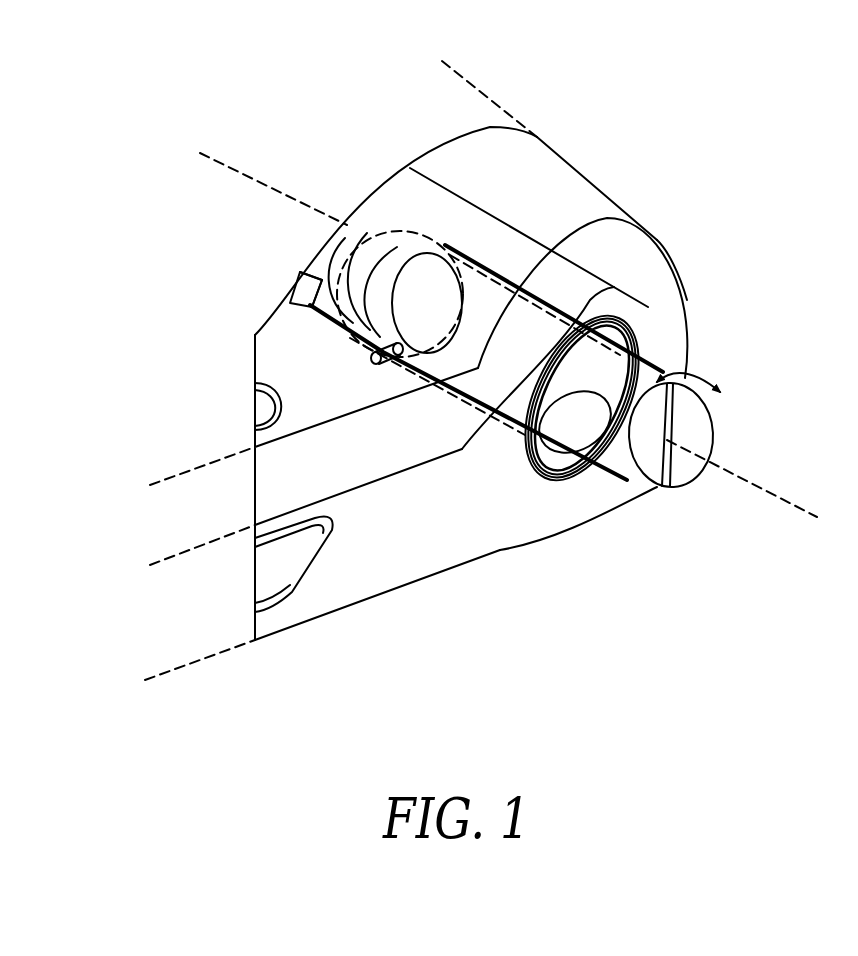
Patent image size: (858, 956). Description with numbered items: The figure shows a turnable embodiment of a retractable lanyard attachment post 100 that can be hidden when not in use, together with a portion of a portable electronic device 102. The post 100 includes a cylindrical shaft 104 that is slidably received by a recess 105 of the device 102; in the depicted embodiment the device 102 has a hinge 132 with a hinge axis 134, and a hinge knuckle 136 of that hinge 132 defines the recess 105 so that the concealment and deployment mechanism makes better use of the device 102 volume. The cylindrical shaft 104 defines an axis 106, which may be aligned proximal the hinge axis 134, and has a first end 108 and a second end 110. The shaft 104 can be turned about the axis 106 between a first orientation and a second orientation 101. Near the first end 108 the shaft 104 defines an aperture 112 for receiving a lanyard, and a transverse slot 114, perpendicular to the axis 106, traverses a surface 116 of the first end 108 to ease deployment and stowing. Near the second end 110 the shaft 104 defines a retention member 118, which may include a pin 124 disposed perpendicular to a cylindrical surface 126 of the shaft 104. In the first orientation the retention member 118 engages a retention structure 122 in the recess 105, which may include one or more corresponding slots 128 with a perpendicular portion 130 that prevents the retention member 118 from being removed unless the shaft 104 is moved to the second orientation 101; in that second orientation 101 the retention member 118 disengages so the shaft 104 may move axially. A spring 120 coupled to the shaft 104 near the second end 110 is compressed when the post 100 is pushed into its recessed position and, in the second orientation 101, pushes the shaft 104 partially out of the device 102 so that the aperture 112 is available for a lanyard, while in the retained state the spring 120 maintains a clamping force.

The retractable lanyard attachment post 100 is at (780, 322).
The second orientation 101 is at (703, 378).
The portable electronic device 102 is at (437, 572).
The cylindrical shaft 104 is at (675, 333).
The recess 105 is at (518, 230).
The axis 106 is at (797, 500).
The first end 108 is at (703, 424).
The second end 110 is at (445, 252).
The aperture 112 is at (582, 442).
The transverse slot 114 is at (665, 488).
The surface 116 is at (640, 478).
The retention member 118 is at (373, 359).
The spring 120 is at (376, 250).
The retention structure 122 is at (293, 294).
The pin 124 is at (352, 359).
The cylindrical surface 126 is at (636, 372).
The slot 128 is at (293, 295).
The perpendicular portion 130 is at (313, 279).
The hinge 132 is at (580, 181).
The hinge axis 134 is at (220, 163).
The hinge knuckle 136 is at (652, 247).